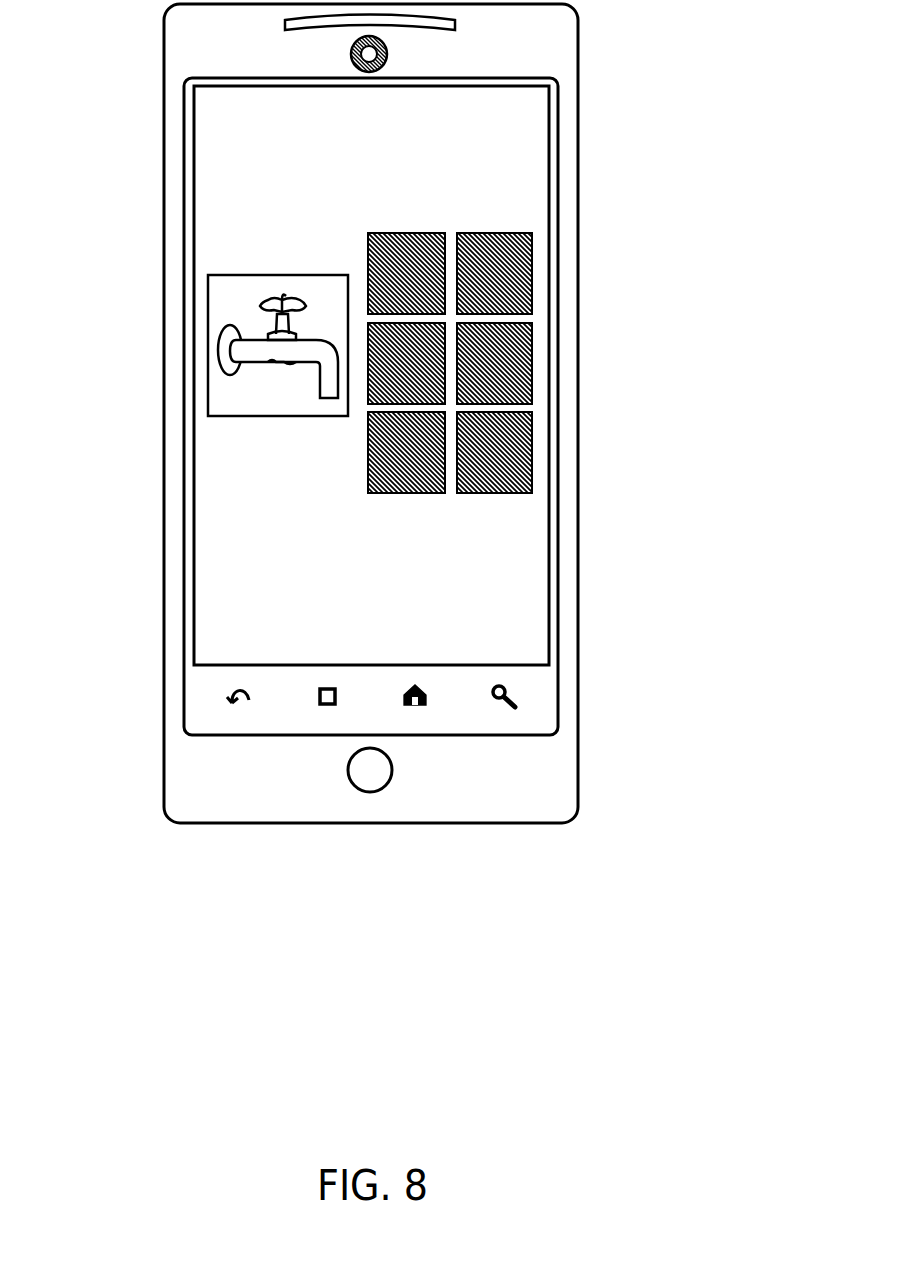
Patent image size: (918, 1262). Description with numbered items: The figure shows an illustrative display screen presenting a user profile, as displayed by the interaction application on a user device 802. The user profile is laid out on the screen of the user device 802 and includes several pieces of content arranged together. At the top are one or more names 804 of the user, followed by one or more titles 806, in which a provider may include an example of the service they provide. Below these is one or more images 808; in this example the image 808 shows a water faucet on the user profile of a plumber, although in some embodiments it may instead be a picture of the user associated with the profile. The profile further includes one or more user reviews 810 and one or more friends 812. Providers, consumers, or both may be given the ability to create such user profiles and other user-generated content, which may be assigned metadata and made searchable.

The user device 802 is at (163, 800).
The names 804 is at (230, 128).
The titles 806 is at (290, 178).
The images 808 is at (222, 300).
The user reviews 810 is at (222, 538).
The friends 812 is at (541, 209).